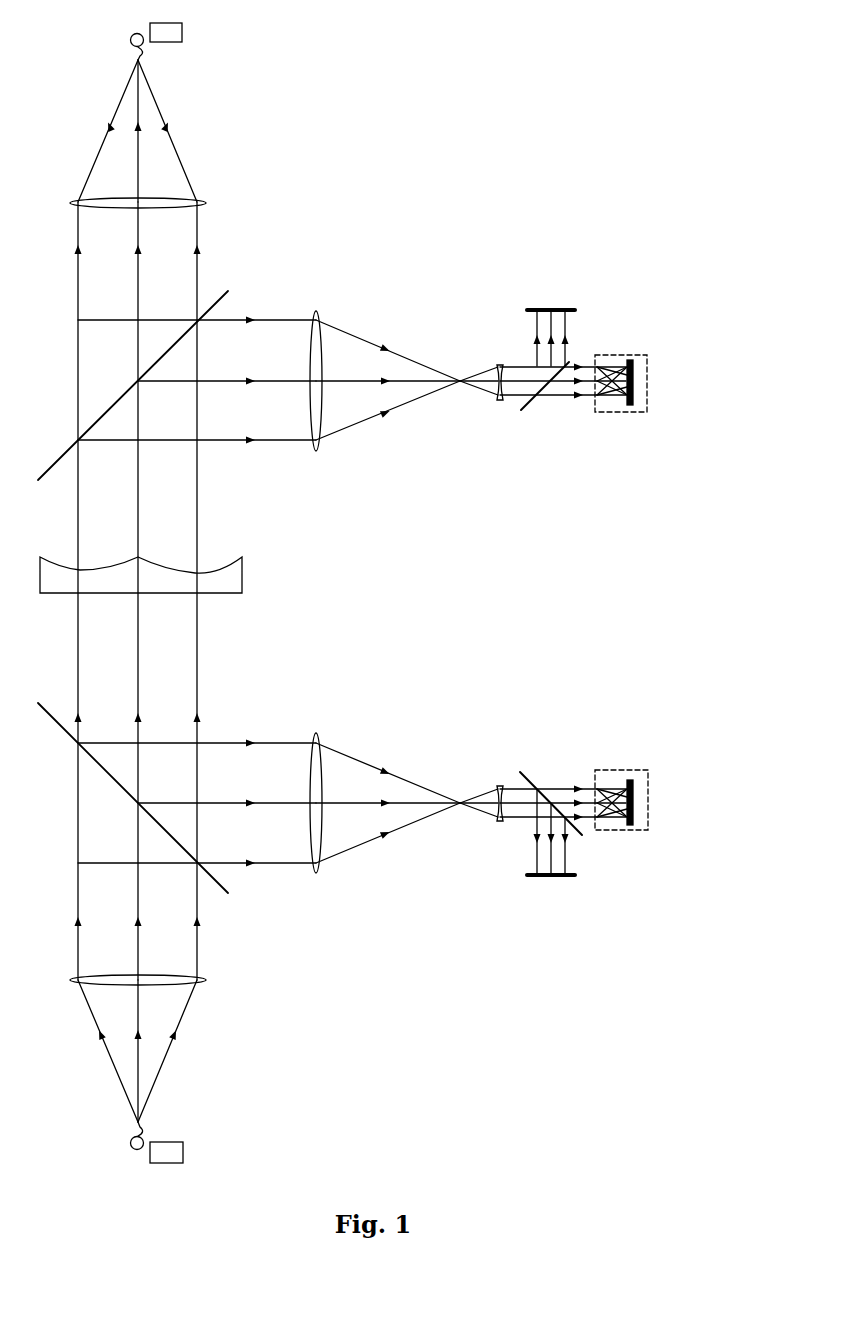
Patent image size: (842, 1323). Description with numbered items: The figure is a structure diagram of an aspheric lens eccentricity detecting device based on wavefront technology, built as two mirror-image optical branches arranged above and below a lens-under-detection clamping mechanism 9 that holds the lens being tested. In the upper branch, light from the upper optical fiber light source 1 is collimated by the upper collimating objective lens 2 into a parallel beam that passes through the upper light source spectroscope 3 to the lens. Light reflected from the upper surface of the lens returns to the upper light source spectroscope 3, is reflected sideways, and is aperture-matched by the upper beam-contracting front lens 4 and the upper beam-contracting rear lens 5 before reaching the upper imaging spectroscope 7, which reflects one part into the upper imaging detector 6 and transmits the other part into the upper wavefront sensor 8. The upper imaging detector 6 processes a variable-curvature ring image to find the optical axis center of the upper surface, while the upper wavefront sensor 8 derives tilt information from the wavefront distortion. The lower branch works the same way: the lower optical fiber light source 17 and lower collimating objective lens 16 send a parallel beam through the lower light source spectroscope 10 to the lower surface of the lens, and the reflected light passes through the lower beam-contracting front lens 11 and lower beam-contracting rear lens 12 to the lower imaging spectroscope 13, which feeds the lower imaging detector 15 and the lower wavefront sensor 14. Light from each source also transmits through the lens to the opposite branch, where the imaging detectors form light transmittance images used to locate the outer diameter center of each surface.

The upper optical fiber light source 1 is at (182, 30).
The upper collimating objective lens 2 is at (160, 202).
The upper light source spectroscope 3 is at (150, 367).
The upper beam-contracting front lens 4 is at (316, 350).
The upper beam-contracting rear lens 5 is at (500, 364).
The upper imaging detector 6 is at (556, 308).
The upper imaging spectroscope 7 is at (569, 362).
The upper wavefront sensor 8 is at (643, 370).
The lens-under-detection clamping mechanism 9 is at (218, 580).
The lower light source spectroscope 10 is at (123, 785).
The lower beam-contracting front lens 11 is at (314, 780).
The lower beam-contracting rear lens 12 is at (496, 788).
The lower imaging spectroscope 13 is at (532, 775).
The lower wavefront sensor 14 is at (618, 770).
The lower imaging detector 15 is at (568, 875).
The lower collimating objective lens 16 is at (170, 982).
The lower optical fiber light source 17 is at (167, 1152).